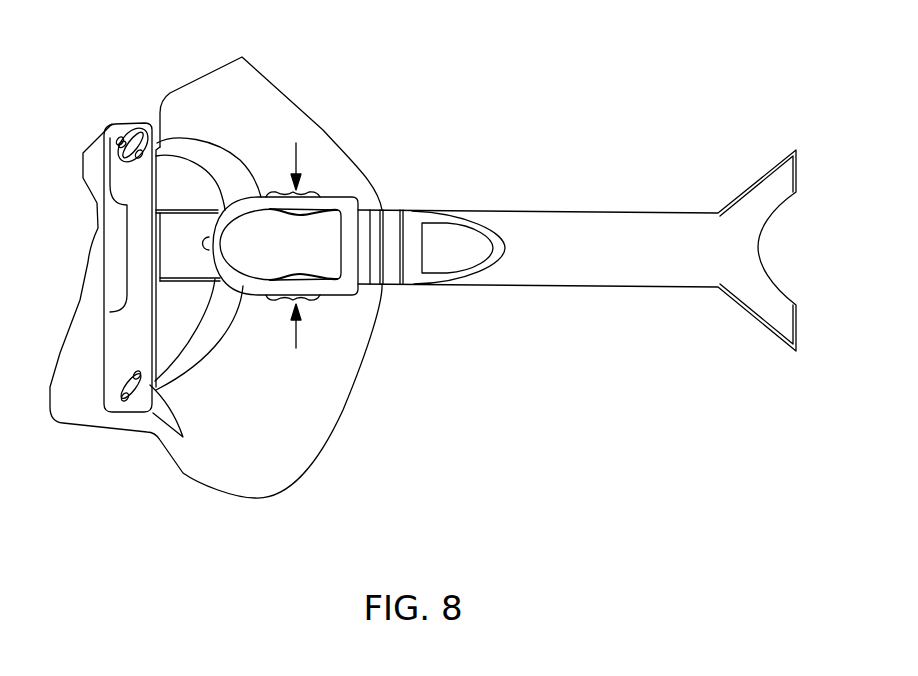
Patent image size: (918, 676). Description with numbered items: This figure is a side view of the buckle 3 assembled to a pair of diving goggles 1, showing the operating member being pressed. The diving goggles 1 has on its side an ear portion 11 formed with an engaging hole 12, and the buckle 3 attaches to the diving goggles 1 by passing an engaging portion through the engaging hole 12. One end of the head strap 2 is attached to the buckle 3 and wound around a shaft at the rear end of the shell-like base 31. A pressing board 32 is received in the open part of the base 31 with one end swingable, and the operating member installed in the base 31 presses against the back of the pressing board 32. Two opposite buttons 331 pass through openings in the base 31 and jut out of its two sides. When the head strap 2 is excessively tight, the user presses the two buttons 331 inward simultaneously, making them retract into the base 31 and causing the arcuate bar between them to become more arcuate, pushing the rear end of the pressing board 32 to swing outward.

The diving goggles 1 is at (207, 105).
The head strap 2 is at (604, 240).
The buckle 3 is at (318, 242).
The ear portion 11 is at (183, 258).
The engaging hole 12 is at (203, 227).
The base 31 is at (347, 199).
The pressing board 32 is at (325, 268).
The button 331 is at (308, 190).